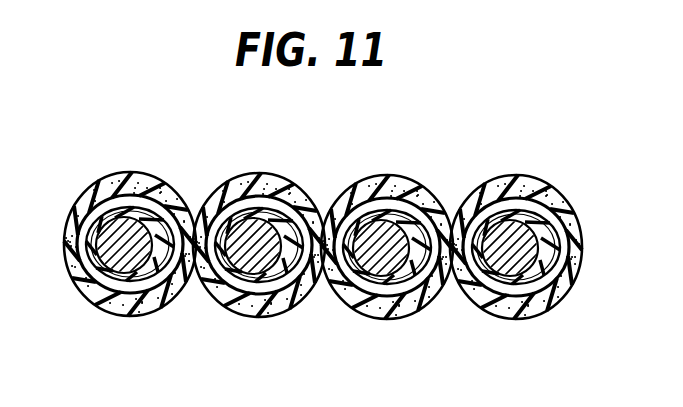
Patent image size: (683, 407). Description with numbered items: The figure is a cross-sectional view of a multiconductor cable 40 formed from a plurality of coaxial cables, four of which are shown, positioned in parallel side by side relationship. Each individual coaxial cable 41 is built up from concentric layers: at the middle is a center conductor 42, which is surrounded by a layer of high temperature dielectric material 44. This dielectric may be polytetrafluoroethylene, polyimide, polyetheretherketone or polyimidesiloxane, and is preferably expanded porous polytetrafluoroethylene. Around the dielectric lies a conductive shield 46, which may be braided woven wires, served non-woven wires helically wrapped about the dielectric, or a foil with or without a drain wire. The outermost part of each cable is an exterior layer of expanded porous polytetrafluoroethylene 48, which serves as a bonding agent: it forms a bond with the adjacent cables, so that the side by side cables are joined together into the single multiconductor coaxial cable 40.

The multiconductor cable 40 is at (315, 137).
The coaxial cable 41 is at (71, 237).
The center conductor 42 is at (125, 270).
The layer of high temperature dielectric material 44 is at (124, 286).
The conductive shield 46 is at (257, 294).
The exterior layer of expanded porous polytetrafluoroethylene 48 is at (259, 275).